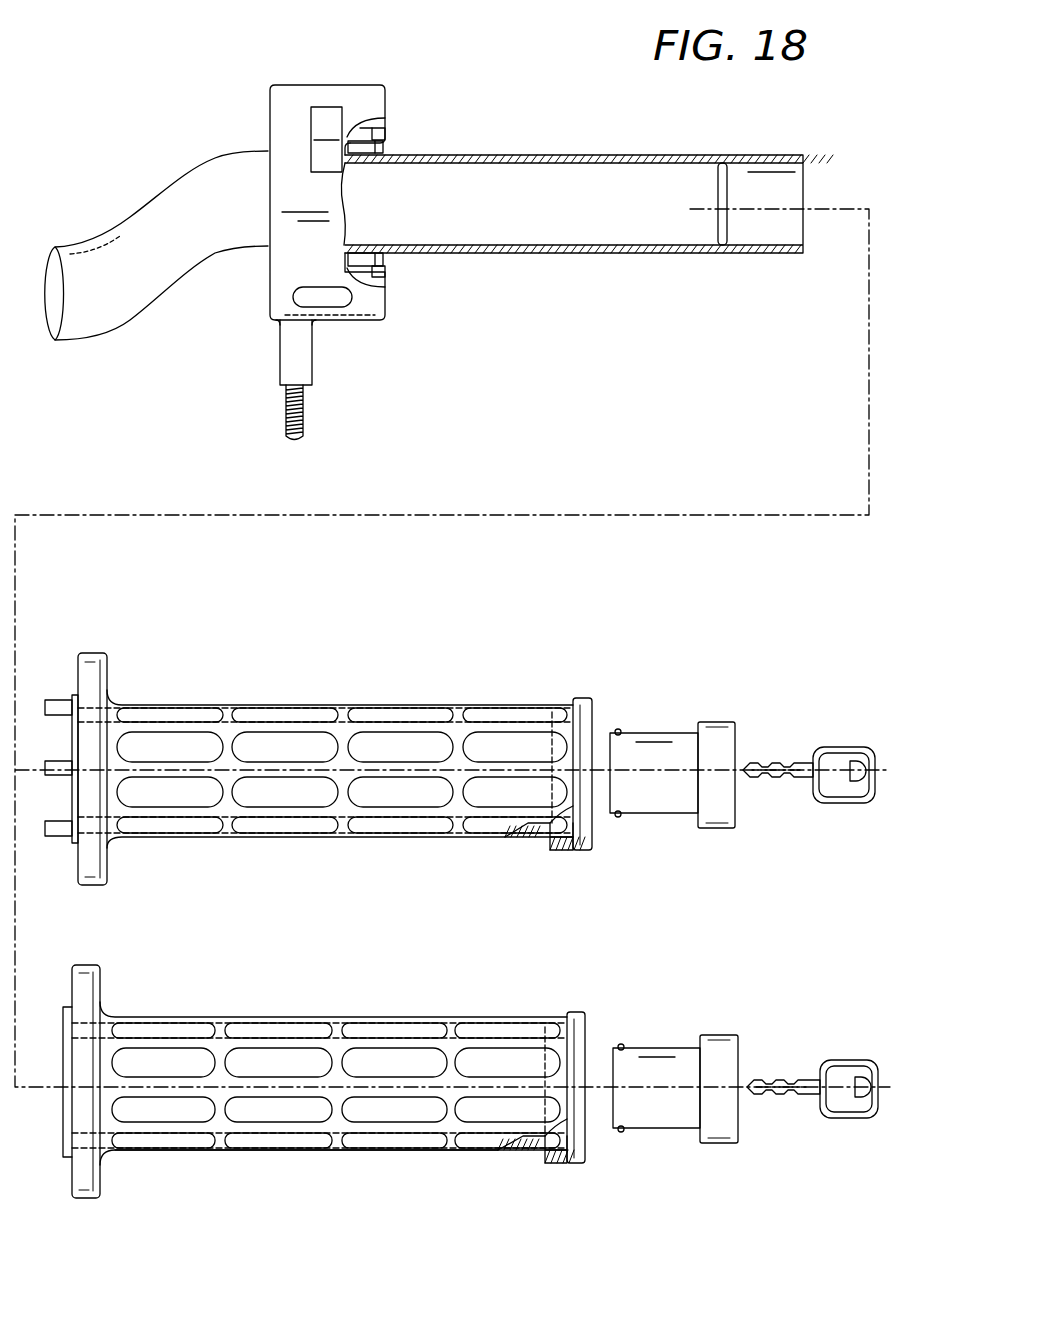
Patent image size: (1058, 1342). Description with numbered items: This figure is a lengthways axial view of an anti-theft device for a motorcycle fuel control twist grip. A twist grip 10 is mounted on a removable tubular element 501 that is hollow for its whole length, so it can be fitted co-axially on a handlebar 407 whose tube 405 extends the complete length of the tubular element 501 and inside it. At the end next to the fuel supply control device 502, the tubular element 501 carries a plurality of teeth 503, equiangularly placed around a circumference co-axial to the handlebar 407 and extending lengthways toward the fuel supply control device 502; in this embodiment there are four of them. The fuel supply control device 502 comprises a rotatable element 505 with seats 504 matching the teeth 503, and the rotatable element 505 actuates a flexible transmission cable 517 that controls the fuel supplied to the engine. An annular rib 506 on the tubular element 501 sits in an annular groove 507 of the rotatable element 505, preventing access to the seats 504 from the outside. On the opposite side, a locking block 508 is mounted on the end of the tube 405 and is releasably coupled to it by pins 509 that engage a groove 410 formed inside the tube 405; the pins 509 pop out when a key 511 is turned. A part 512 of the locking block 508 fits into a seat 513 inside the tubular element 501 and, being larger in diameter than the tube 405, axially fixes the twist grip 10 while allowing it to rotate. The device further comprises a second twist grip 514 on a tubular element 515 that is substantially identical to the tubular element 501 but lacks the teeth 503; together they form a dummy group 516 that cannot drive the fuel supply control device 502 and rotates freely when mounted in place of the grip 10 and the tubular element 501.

The twist grip 10 is at (258, 745).
The tube 405 is at (762, 256).
The handlebar 407 is at (215, 147).
The groove 410 is at (721, 246).
The tubular element 501 is at (530, 823).
The fuel supply control device 502 is at (314, 83).
The teeth 503 is at (54, 705).
The seats 504 is at (362, 148).
The rotatable element 505 is at (383, 266).
The annular rib 506 is at (76, 745).
The annular groove 507 is at (385, 138).
The locking block 508 is at (657, 731).
The pins 509 is at (617, 729).
The key 511 is at (840, 767).
The part 512 is at (720, 720).
The seat 513 is at (563, 822).
The second twist grip 514 is at (290, 1110).
The tubular element 515 is at (518, 1150).
The dummy group 516 is at (408, 1153).
The flexible transmission cable 517 is at (308, 417).